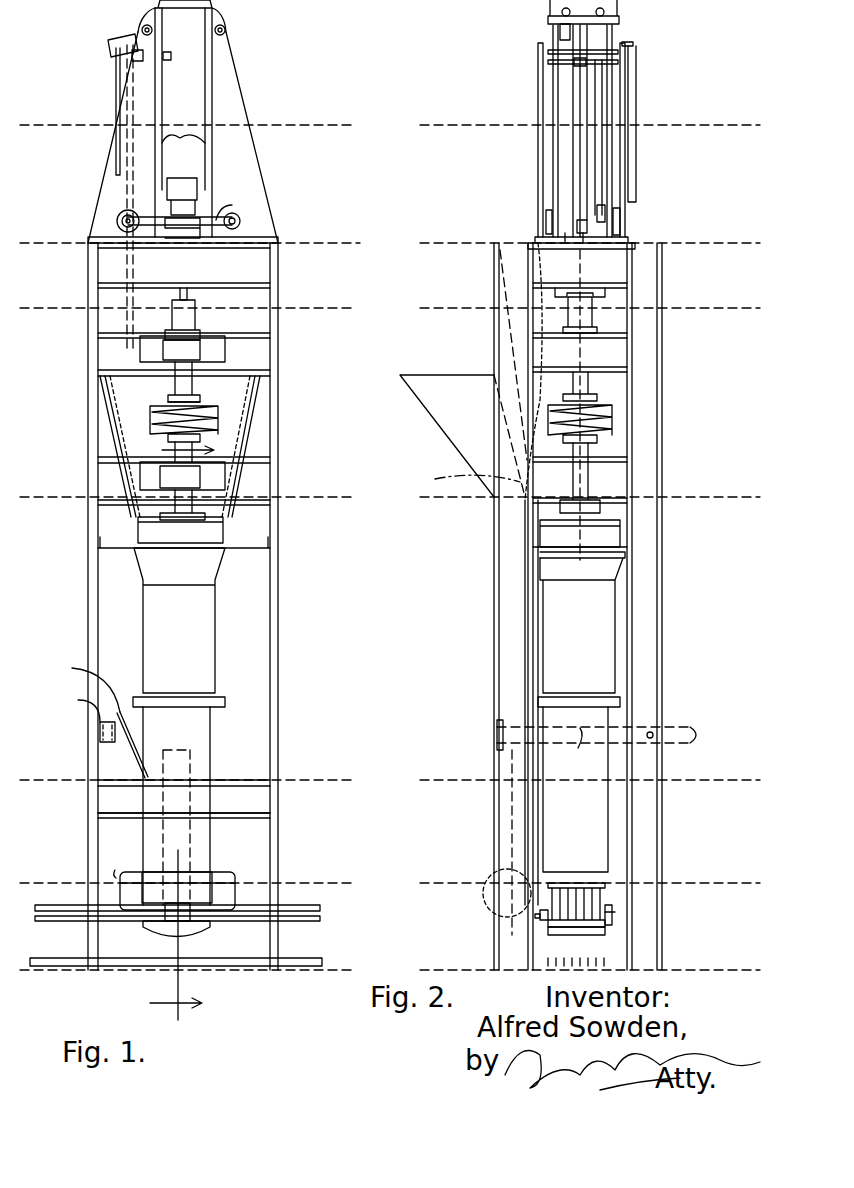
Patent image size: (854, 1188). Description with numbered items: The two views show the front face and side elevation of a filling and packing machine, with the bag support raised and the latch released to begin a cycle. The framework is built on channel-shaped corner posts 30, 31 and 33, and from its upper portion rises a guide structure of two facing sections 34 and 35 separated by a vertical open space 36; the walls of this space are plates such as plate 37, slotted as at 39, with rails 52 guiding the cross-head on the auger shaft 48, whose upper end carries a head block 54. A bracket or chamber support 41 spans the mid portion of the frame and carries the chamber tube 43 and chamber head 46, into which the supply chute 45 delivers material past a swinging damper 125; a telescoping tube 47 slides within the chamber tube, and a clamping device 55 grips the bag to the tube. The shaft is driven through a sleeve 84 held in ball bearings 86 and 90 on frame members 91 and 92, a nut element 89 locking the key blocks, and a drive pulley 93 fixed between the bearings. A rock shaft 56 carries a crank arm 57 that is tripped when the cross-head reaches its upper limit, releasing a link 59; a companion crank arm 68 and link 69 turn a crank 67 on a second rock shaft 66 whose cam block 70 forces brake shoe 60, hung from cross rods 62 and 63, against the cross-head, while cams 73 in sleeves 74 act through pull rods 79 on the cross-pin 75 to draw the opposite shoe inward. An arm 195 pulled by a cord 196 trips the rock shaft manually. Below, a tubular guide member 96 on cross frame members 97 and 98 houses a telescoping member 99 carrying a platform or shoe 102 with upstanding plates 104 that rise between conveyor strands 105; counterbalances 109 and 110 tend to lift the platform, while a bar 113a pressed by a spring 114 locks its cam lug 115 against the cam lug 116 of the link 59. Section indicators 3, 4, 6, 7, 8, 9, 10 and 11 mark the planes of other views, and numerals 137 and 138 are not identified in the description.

In FIG. 2, the flange / section 3 is at (565, 505).
In FIG. 1, the section line 4- 4 is at (188, 733).
In FIG. 1, the section line 6- 6 is at (330, 138).
In FIG. 2, the section line 6- 6 is at (695, 138).
In FIG. 1, the section line 7- 7 is at (330, 256).
In FIG. 2, the section line 7- 7 is at (703, 256).
In FIG. 1, the section line 8- 8 is at (338, 323).
In FIG. 2, the section line 8- 8 is at (715, 323).
In FIG. 1, the section line 9- 9 is at (335, 511).
In FIG. 2, the section line 9- 9 is at (710, 511).
In FIG. 1, the section line 10- 10 is at (337, 794).
In FIG. 2, the section line 10- 10 is at (693, 794).
In FIG. 1, the section line 11- 11 is at (328, 896).
In FIG. 2, the section line 11- 11 is at (700, 896).
In FIG. 1, the corner post 30 is at (96, 612).
In FIG. 2, the corner post 30 is at (642, 617).
In FIG. 1, the corner post 31 is at (272, 606).
In FIG. 2, the corner post 33 is at (498, 632).
In FIG. 1, the guide structure section 34 is at (92, 176).
In FIG. 2, the guide structure section 34 is at (559, 179).
In FIG. 1, the guide structure section 35 is at (272, 167).
In FIG. 1, the vertical open space 36 is at (203, 89).
In FIG. 2, the plate 37 is at (563, 147).
In FIG. 2, the vertical slot 39 is at (565, 160).
In FIG. 1, the bracket or chamber support 41 is at (240, 550).
In FIG. 2, the bracket or chamber support 41 is at (640, 555).
In FIG. 1, the chamber tube 43 is at (190, 648).
In FIG. 2, the chamber tube 43 is at (590, 646).
In FIG. 1, the supply chute 45 is at (235, 445).
In FIG. 2, the supply chute 45 is at (475, 445).
In FIG. 1, the chamber head 46 is at (205, 528).
In FIG. 2, the chamber head 46 is at (605, 527).
In FIG. 1, the telescoping tube 47 is at (190, 728).
In FIG. 2, the telescoping tube 47 is at (590, 826).
In FIG. 1, the auger shaft 48 is at (185, 292).
In FIG. 2, the auger shaft 48 is at (585, 296).
In FIG. 1, the vertical bars or rails 52 is at (183, 127).
In FIG. 1, the head block 54 is at (198, 190).
In FIG. 1, the clamping device 55 is at (225, 702).
In FIG. 2, the clamping device 55 is at (622, 702).
In FIG. 1, the rock shaft 56 is at (132, 58).
In FIG. 2, the rock shaft 56 is at (574, 63).
In FIG. 1, the crank arm 57 is at (171, 57).
In FIG. 1, the link 59 is at (112, 188).
In FIG. 2, the link 59 is at (538, 194).
In FIG. 2, the brake shoe 60 is at (573, 117).
In FIG. 1, the cross rod 62 is at (142, 27).
In FIG. 2, the cross rod 62 is at (558, 22).
In FIG. 1, the cross rod 63 is at (226, 30).
In FIG. 1, the rock shaft 66 is at (117, 227).
In FIG. 2, the rock shaft 66 is at (566, 244).
In FIG. 2, the crank 67 is at (605, 212).
In FIG. 2, the companion crank arm 68 is at (553, 50).
In FIG. 2, the link 69 is at (602, 180).
In FIG. 2, the cam block 70 is at (585, 245).
In FIG. 1, the cam 73 is at (118, 215).
In FIG. 1, the sleeve 74 is at (110, 240).
In FIG. 2, the sleeve 74 is at (622, 224).
In FIG. 1, the cross-pin 75 is at (240, 217).
In FIG. 1, the pull rod or link 79 is at (238, 206).
In FIG. 1, the sleeve 84 is at (183, 384).
In FIG. 2, the sleeve 84 is at (580, 377).
In FIG. 1, the ball bearing 86 is at (185, 352).
In FIG. 1, the nut element 89 is at (187, 332).
In FIG. 2, the nut element 89 is at (585, 328).
In FIG. 1, the anti-friction bearing 90 is at (200, 478).
In FIG. 1, the frame member 91 is at (245, 362).
In FIG. 1, the frame member 92 is at (232, 489).
In FIG. 1, the drive pulley 93 is at (210, 412).
In FIG. 2, the drive pulley 93 is at (612, 420).
In FIG. 2, the tubular guide member 96 is at (525, 853).
In FIG. 1, the cross frame member 97 is at (235, 755).
In FIG. 1, the cross frame member 98 is at (240, 815).
In FIG. 1, the telescoping member 99 is at (185, 872).
In FIG. 2, the telescoping member 99 is at (540, 913).
In FIG. 1, the platform or shoe 102 is at (200, 932).
In FIG. 2, the platform or shoe 102 is at (570, 935).
In FIG. 1, the upwardly extending plates 104 is at (200, 883).
In FIG. 2, the upwardly extending plates 104 is at (590, 890).
In FIG. 2, the conveyor strands 105 is at (640, 912).
In FIG. 1, the counterbalance 109 is at (116, 860).
In FIG. 2, the counterbalance 109 is at (485, 900).
In FIG. 1, the counterbalance 110 is at (232, 873).
In FIG. 1, the forwardly extending bar 113a is at (100, 732).
In FIG. 2, the forwardly extending bar 113a is at (589, 748).
In FIG. 1, the spring 114 is at (71, 705).
In FIG. 2, the spring 114 is at (662, 722).
In FIG. 1, the cam lug 115 is at (118, 730).
In FIG. 1, the cam lug 116 is at (81, 684).
In FIG. 2, the swinging damper 125 is at (459, 476).
In FIG. 1, the base bar 137 is at (300, 918).
In FIG. 2, the base bar 137 is at (612, 920).
In FIG. 2, the stop 138 is at (535, 917).
In FIG. 1, the arm 195 is at (108, 45).
In FIG. 2, the arm 195 is at (636, 50).
In FIG. 1, the cord 196 is at (116, 92).
In FIG. 2, the cord 196 is at (636, 96).